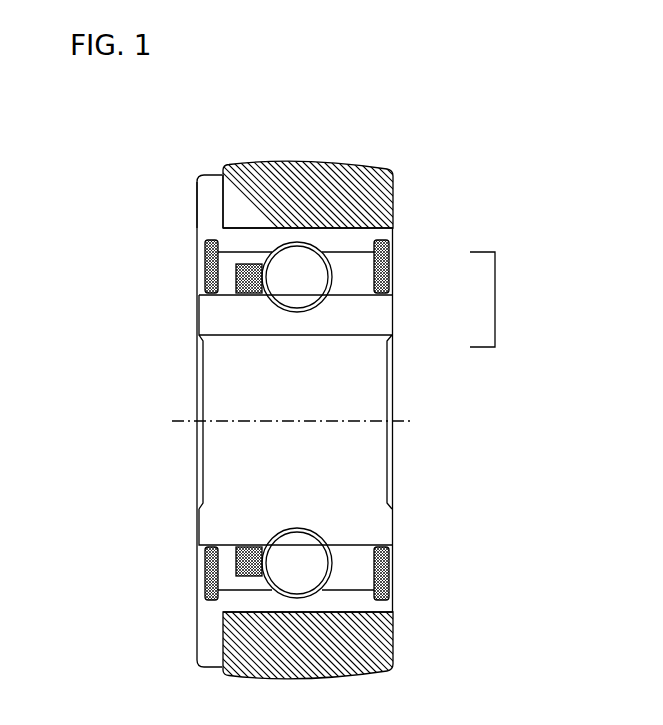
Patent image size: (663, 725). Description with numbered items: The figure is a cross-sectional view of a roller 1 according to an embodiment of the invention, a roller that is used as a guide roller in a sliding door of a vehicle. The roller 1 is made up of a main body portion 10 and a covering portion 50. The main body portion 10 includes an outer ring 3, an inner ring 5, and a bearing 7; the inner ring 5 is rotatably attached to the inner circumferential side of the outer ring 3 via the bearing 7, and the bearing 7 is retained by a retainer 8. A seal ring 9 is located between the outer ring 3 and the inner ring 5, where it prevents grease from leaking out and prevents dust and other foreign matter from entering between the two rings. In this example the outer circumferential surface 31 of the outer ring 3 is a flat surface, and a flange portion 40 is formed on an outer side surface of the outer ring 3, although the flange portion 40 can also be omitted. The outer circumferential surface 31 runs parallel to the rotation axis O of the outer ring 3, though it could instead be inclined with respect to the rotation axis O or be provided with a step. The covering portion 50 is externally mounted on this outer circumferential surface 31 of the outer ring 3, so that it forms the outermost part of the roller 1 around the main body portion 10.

The roller 1 is at (367, 163).
The flange portion 40 is at (212, 190).
The covering portion 50 is at (245, 165).
The outer circumferential surface 31 is at (347, 395).
The outer ring 3 is at (342, 245).
The bearing 7 is at (325, 283).
The inner ring 5 is at (365, 312).
The retainer 8 is at (233, 283).
The seal ring 9 is at (205, 272).
The main body portion 10 is at (494, 299).
The rotation axis O is at (305, 423).